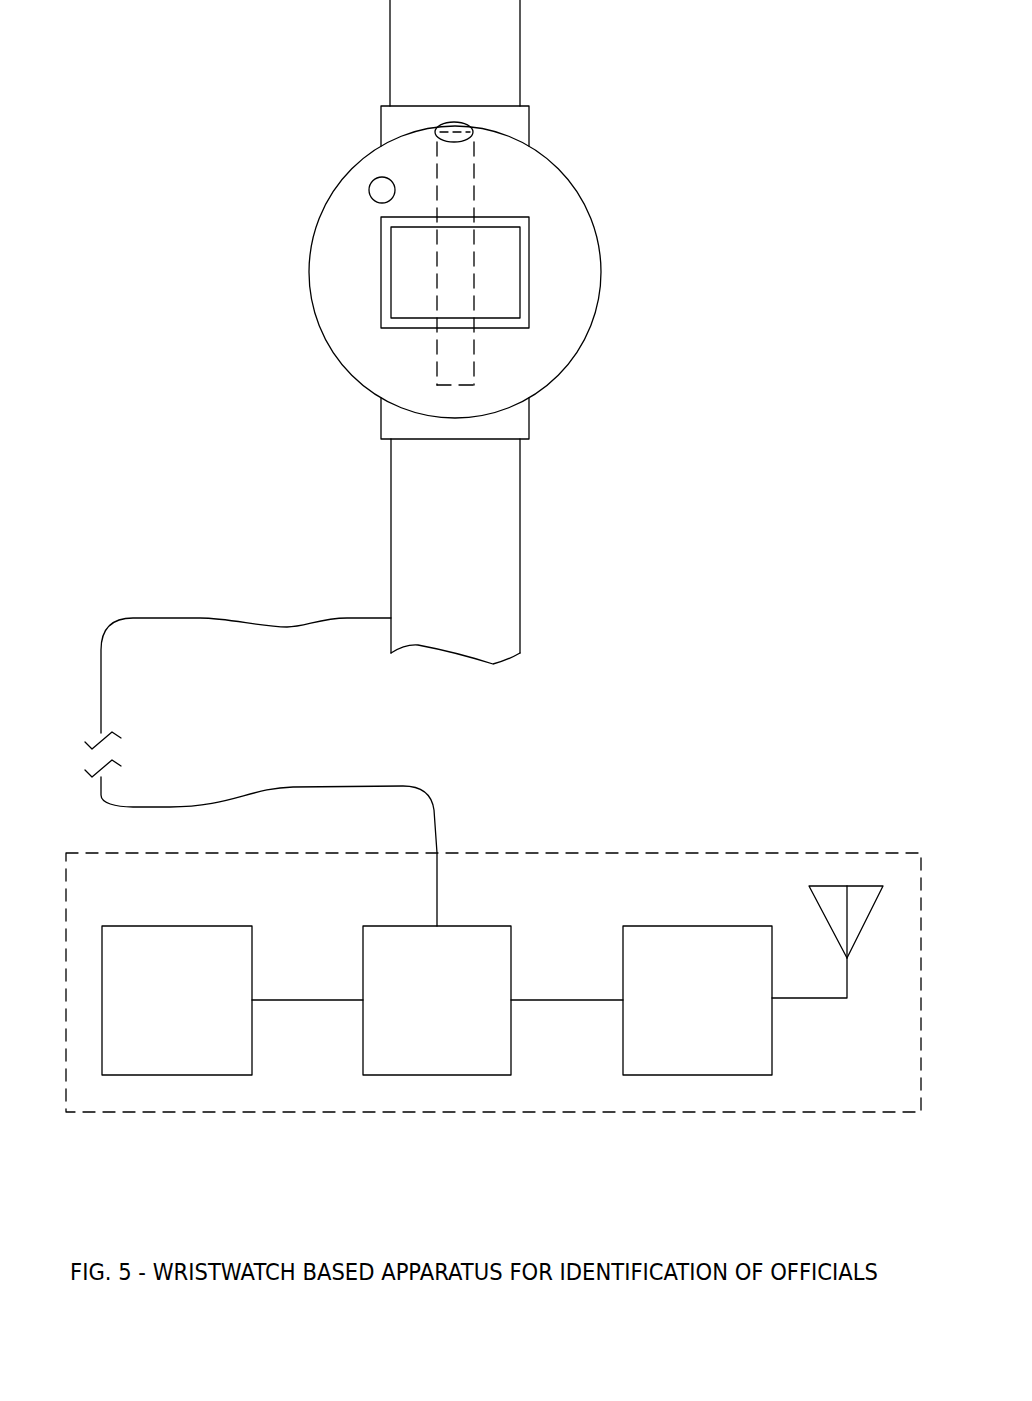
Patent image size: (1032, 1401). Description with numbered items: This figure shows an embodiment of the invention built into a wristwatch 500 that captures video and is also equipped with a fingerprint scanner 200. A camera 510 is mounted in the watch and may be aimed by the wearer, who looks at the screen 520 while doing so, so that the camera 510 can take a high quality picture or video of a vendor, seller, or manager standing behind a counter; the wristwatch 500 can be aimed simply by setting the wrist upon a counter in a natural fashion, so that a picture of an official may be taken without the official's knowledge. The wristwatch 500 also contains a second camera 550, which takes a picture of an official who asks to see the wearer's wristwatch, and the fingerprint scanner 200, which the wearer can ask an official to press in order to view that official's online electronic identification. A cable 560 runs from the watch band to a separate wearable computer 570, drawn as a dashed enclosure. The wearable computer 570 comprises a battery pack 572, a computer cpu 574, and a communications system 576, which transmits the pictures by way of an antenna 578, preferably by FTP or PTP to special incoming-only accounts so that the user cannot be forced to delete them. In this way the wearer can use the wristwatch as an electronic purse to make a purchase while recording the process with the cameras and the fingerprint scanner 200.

The fingerprint scanner 200 is at (522, 300).
The wristwatch 500 is at (577, 188).
The camera 510 is at (475, 168).
The screen 520 is at (530, 272).
The second camera 550 is at (373, 190).
The cable 560 is at (317, 617).
The wearable computer 570 is at (689, 852).
The battery pack 572 is at (148, 1075).
The computer cpu 574 is at (390, 1075).
The communications system 576 is at (648, 1075).
The antenna 578 is at (828, 886).